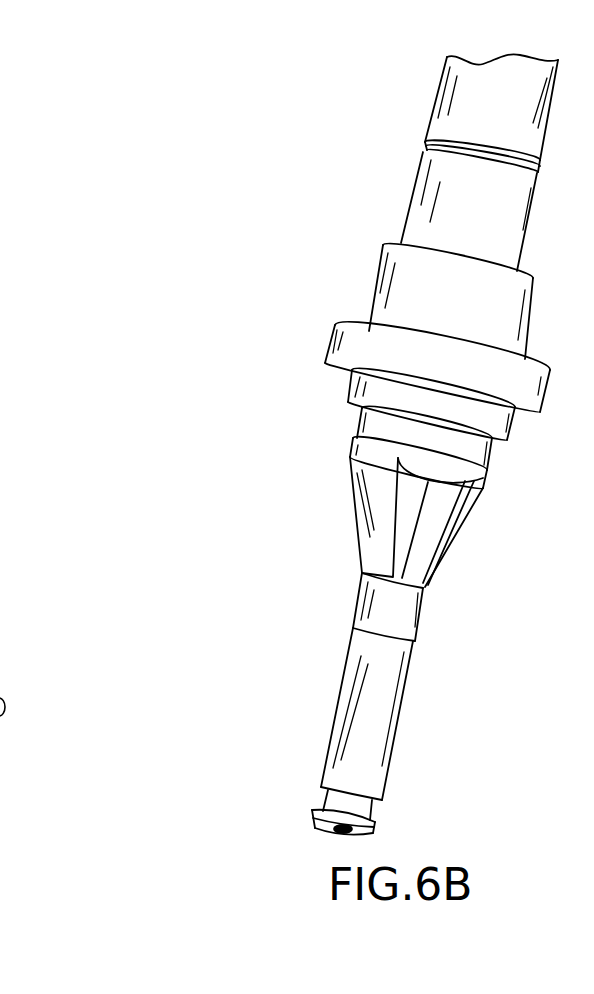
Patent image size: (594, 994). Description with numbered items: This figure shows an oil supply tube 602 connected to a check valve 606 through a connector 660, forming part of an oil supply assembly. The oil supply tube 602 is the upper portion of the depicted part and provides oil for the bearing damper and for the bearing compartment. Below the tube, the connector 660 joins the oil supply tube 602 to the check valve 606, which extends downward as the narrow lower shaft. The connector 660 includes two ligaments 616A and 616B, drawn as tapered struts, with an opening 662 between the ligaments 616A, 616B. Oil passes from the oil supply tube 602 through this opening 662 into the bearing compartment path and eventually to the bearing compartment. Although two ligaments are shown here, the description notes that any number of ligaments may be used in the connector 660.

The oil supply tube 602 is at (432, 188).
The connector 660 is at (415, 494).
The ligament 616A is at (368, 533).
The ligament 616B is at (430, 556).
The opening 662 is at (430, 506).
The check valve 606 is at (350, 688).